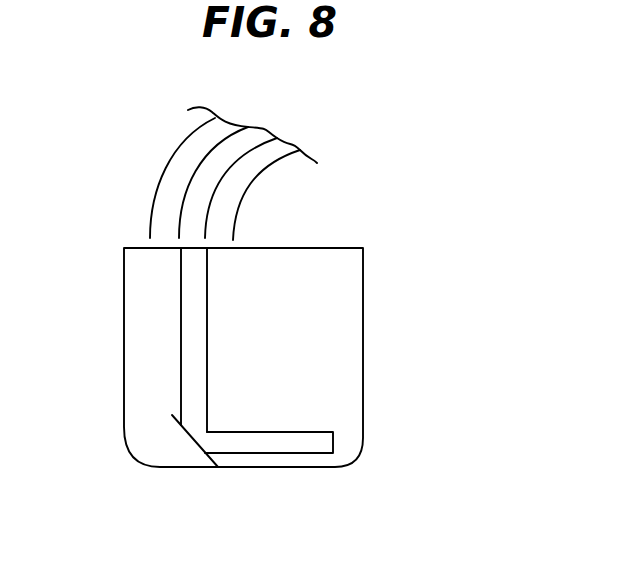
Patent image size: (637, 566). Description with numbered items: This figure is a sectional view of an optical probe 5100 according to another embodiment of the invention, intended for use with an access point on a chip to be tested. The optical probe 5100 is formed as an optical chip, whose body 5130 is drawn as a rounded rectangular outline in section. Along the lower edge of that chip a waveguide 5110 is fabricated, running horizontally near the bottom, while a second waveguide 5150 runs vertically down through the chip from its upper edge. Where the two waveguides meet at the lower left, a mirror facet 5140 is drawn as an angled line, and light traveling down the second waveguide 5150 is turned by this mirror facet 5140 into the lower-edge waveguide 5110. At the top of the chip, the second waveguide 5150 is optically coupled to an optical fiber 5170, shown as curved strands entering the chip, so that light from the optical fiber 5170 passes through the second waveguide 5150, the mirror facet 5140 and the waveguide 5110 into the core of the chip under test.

The optical probe 5100 is at (275, 322).
The waveguide 5110 is at (293, 440).
The housing body 5130 is at (330, 367).
The mirror facet 5140 is at (190, 442).
The second waveguide 5150 is at (190, 347).
The optical fiber 5170 is at (165, 163).